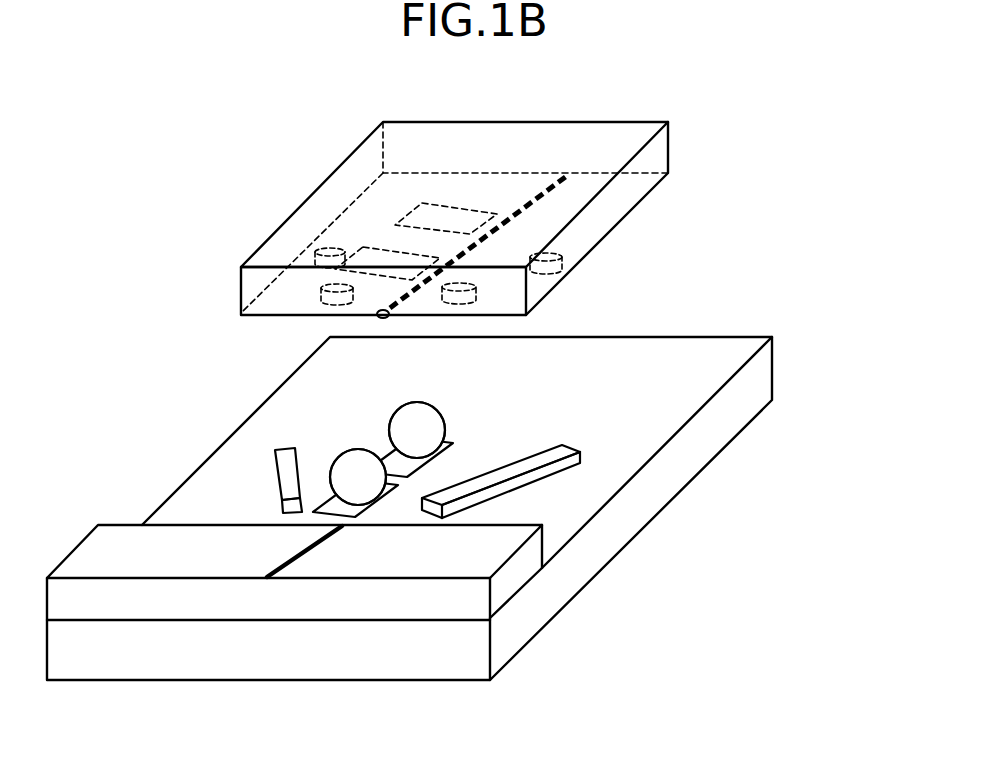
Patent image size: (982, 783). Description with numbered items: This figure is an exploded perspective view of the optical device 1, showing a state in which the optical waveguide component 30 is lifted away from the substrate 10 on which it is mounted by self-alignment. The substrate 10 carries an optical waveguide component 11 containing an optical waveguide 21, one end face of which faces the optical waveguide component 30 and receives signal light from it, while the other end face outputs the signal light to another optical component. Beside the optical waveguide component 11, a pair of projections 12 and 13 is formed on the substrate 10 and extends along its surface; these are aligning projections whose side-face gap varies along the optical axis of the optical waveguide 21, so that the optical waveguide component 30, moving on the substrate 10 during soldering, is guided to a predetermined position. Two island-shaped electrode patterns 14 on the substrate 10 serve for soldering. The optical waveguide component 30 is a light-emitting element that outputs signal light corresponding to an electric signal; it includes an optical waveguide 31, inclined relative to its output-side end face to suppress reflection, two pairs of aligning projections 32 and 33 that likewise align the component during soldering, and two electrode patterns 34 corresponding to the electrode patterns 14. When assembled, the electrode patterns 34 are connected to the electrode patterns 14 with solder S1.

The optical device 1 is at (848, 135).
The substrate 10 is at (775, 385).
The optical waveguide component 11 is at (517, 570).
The projection 12 is at (567, 465).
The projection 13 is at (273, 485).
The electrode pattern 14 is at (445, 435).
The optical waveguide 21 is at (303, 555).
The optical waveguide component 30 is at (668, 155).
The optical waveguide 31 is at (521, 203).
The projection 32 is at (477, 291).
The projection 33 is at (322, 292).
The electrode pattern 34 is at (373, 248).
The solder S1 is at (387, 422).